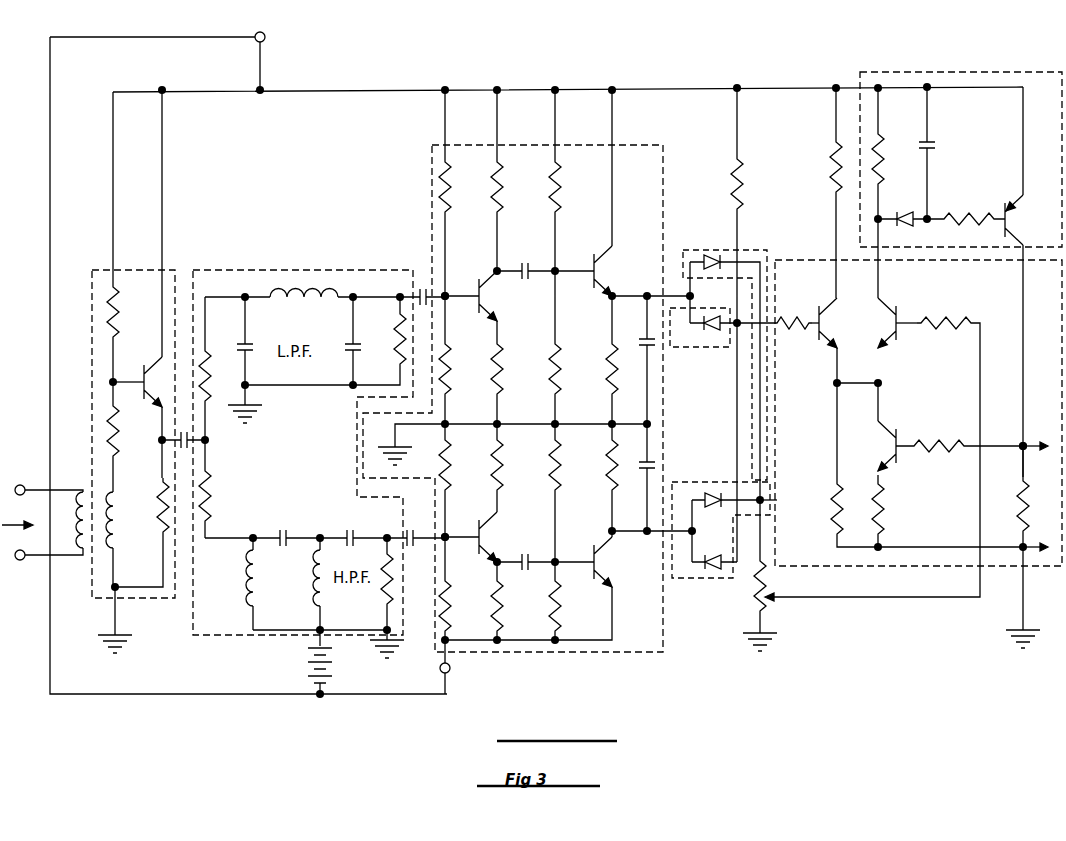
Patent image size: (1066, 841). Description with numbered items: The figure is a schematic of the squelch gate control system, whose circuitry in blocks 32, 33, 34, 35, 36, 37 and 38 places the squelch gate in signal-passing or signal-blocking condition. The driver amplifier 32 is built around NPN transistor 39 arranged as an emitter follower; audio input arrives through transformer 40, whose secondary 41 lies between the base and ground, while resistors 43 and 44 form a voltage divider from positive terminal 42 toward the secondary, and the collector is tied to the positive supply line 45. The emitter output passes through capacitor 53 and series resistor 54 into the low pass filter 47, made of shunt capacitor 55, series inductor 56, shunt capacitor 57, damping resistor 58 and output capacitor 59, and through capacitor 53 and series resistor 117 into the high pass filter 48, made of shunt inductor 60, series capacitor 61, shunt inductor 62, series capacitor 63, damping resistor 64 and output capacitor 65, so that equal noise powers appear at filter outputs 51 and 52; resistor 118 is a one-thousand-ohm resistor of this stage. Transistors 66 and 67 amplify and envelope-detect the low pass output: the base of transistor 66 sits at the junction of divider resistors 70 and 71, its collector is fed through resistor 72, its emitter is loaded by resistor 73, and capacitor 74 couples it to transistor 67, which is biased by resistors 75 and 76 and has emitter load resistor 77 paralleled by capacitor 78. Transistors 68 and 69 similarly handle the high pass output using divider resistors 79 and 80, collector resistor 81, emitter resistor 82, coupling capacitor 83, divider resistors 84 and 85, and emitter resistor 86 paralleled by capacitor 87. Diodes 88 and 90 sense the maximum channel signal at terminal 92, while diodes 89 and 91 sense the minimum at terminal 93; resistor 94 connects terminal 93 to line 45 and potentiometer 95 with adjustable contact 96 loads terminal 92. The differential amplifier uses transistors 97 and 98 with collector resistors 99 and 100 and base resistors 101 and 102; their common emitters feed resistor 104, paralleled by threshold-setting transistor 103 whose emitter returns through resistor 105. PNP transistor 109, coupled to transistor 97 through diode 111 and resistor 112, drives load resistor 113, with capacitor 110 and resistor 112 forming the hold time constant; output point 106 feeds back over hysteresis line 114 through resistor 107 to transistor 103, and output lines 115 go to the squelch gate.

The driver amplifier 32 is at (88, 288).
The circuit block 33 is at (258, 268).
The circuit block 34 is at (630, 140).
The circuit block 35 is at (748, 245).
The circuit block 36 is at (685, 590).
The circuit block 37 is at (1007, 575).
The circuit block 38 is at (990, 70).
The transistor 39 is at (146, 376).
The transformer 40 is at (85, 562).
The secondary 41 is at (117, 525).
The positive terminal 42 is at (265, 37).
The resistor 43 is at (118, 316).
The resistor 44 is at (118, 440).
The positive voltage supply line 45 is at (311, 90).
The low pass filter circuit 47 is at (304, 372).
The high pass filter network 48 is at (286, 560).
The output 51 is at (447, 294).
The output 52 is at (450, 531).
The capacitor 53 is at (184, 447).
The series resistor 54 is at (212, 349).
The shunt capacitor 55 is at (251, 347).
The series inductor 56 is at (300, 300).
The shunt capacitor 57 is at (360, 345).
The damping resistor 58 is at (396, 344).
The series filter output capacitor 59 is at (418, 288).
The shunt inductor 60 is at (243, 578).
The series capacitor 61 is at (280, 532).
The shunt inductor 62 is at (311, 575).
The series capacitor 63 is at (350, 530).
The damping resistor 64 is at (376, 593).
The output capacitor 65 is at (408, 528).
The transistor 66 is at (490, 297).
The transistor 67 is at (605, 272).
The transistor 68 is at (490, 538).
The transistor 69 is at (608, 562).
The resistor 70 is at (450, 359).
The resistor 71 is at (450, 187).
The resistor 72 is at (500, 187).
The emitter load resistor 73 is at (500, 359).
The capacitor 74 is at (527, 265).
The resistor 75 is at (556, 187).
The resistor 76 is at (556, 359).
The emitter load resistor 77 is at (612, 374).
The capacitor 78 is at (645, 338).
The resistor 79 is at (448, 470).
The resistor 80 is at (448, 599).
The resistor 81 is at (506, 608).
The emitter load resistor 82 is at (500, 470).
The capacitor 83 is at (527, 566).
The resistor 84 is at (566, 608).
The resistor 85 is at (560, 470).
The emitter load resistor 86 is at (610, 480).
The capacitor 87 is at (647, 475).
The diode 88 is at (711, 254).
The diode 89 is at (713, 338).
The diode 90 is at (713, 492).
The diode 91 is at (715, 572).
The terminal 92 is at (775, 500).
The terminal 93 is at (740, 326).
The resistor 94 is at (744, 185).
The resistor 95 is at (772, 582).
The adjustable contact 96 is at (776, 600).
The transistor 97 is at (887, 325).
The transistor 98 is at (828, 326).
The collector resistor 99 is at (885, 147).
The collector resistor 100 is at (832, 151).
The resistor 101 is at (930, 316).
The resistor 102 is at (787, 315).
The transistor 103 is at (888, 446).
The resistor 104 is at (830, 515).
The resistor 105 is at (888, 514).
The output point 106 is at (1022, 446).
The resistor 107 is at (952, 450).
The transistor 109 is at (1042, 218).
The capacitor 110 is at (931, 148).
The diode 111 is at (903, 212).
The resistor 112 is at (978, 212).
The load resistor 113 is at (1012, 510).
The hysteresis feedback line 114 is at (1000, 442).
The output lines 115 is at (1043, 536).
The series resistor 117 is at (212, 495).
The resistor 118 is at (158, 516).